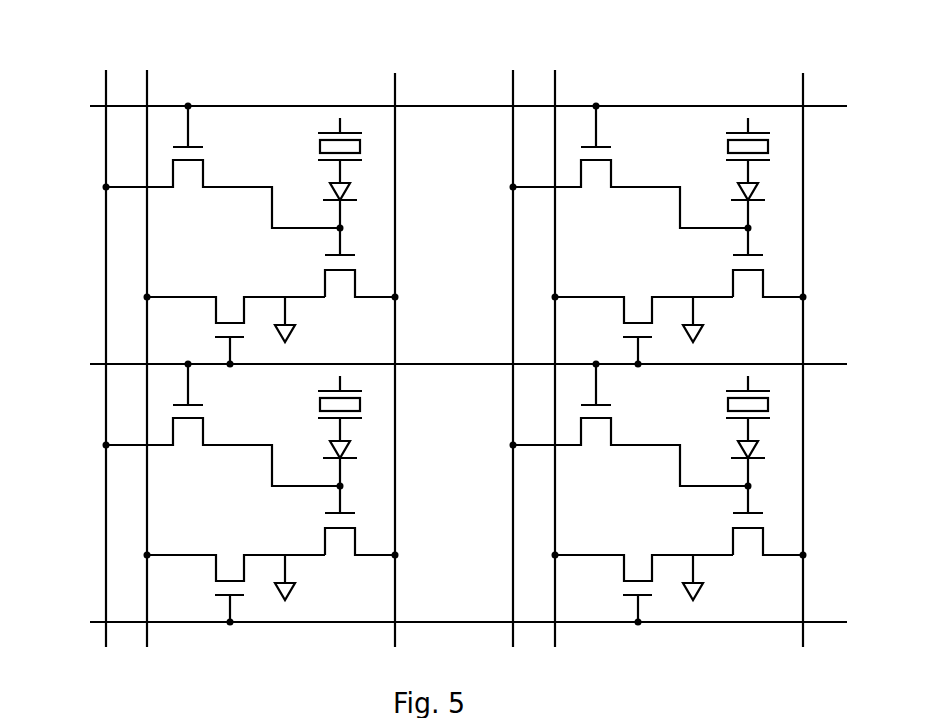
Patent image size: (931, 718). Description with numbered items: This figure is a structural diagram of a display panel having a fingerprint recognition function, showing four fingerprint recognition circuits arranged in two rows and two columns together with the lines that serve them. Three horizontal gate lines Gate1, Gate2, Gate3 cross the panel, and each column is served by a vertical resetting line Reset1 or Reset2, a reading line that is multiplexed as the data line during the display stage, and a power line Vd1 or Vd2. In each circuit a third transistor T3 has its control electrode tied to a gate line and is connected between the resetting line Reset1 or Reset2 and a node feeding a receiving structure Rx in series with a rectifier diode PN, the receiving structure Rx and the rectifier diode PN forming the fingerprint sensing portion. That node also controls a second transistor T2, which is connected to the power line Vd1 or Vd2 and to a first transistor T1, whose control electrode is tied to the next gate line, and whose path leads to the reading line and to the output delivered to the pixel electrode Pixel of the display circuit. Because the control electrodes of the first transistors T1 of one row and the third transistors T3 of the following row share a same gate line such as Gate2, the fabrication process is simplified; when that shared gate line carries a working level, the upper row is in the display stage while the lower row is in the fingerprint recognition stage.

The resetting line Reset1 is at (95, 343).
The resetting line Reset2 is at (511, 342).
The power line Vd1 is at (397, 342).
The power line Vd2 is at (806, 342).
The gate line Gate1 is at (437, 115).
The gate line Gate2 is at (437, 374).
The gate line Gate3 is at (437, 629).
The first transistor T1 is at (439, 448).
The second transistor T2 is at (565, 418).
The third transistor T3 is at (426, 295).
The receiving structure Rx is at (559, 279).
The rectifier diode PN is at (563, 348).
The pixel electrode Pixel is at (516, 456).